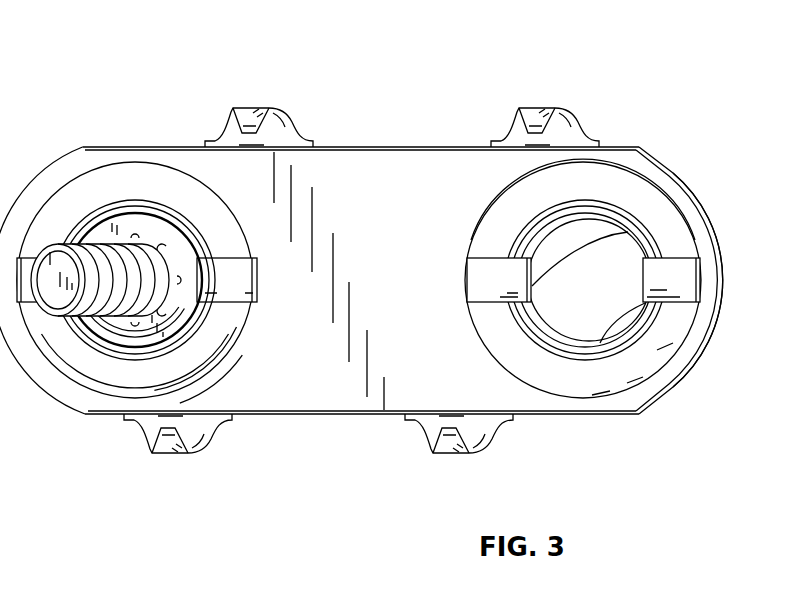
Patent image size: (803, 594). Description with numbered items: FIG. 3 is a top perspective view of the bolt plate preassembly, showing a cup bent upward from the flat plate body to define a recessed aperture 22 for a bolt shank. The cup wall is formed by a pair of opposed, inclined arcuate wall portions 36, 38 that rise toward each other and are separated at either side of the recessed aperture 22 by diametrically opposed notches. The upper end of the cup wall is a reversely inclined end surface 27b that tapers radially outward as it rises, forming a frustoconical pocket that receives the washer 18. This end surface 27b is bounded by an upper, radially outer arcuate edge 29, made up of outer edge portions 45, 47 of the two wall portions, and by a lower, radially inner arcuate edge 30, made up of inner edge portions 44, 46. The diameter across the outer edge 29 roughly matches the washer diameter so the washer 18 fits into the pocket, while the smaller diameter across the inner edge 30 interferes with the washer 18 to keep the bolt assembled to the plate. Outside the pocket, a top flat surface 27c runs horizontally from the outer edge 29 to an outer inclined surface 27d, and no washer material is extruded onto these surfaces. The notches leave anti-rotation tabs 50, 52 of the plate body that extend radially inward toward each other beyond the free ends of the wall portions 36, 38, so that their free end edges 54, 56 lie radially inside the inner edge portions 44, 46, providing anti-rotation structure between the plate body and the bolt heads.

The washer 18 is at (130, 225).
The recessed aperture 22 is at (621, 243).
The inclined end surface of cup wall 27b is at (640, 244).
The top flat surface 27c is at (650, 311).
The outer inclined surface 27d is at (568, 388).
The upper outer arcuate edge 29 is at (628, 232).
The lower inner arcuate edge 30 is at (603, 342).
The arcuate wall portion 36 is at (587, 178).
The arcuate wall portion 38 is at (640, 318).
The lower inner edge portion 44 is at (523, 249).
The upper outer edge portion 45 is at (523, 230).
The lower inner edge portion 46 is at (580, 341).
The upper outer edge portion 47 is at (545, 346).
The anti-rotation tab 50 is at (493, 313).
The anti-rotation tab 52 is at (683, 279).
The free end edge of tab 54 is at (592, 208).
The free end edge of tab 56 is at (585, 323).